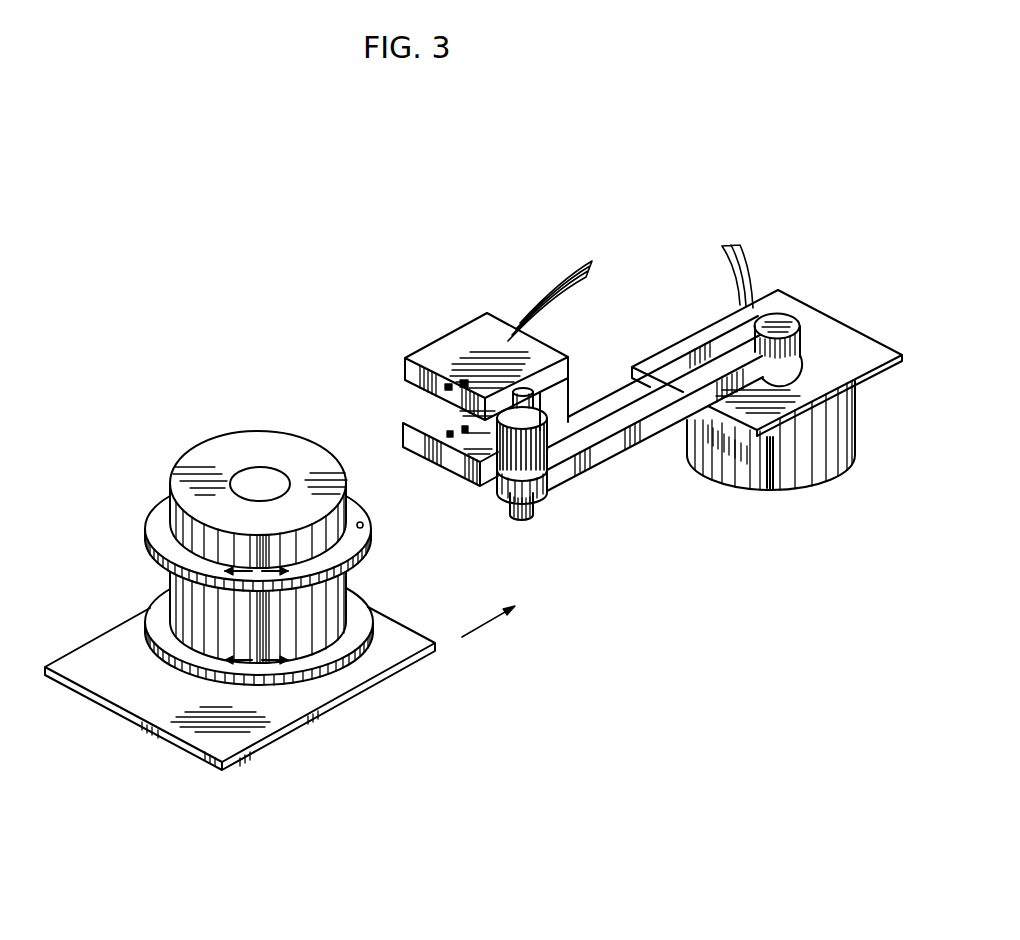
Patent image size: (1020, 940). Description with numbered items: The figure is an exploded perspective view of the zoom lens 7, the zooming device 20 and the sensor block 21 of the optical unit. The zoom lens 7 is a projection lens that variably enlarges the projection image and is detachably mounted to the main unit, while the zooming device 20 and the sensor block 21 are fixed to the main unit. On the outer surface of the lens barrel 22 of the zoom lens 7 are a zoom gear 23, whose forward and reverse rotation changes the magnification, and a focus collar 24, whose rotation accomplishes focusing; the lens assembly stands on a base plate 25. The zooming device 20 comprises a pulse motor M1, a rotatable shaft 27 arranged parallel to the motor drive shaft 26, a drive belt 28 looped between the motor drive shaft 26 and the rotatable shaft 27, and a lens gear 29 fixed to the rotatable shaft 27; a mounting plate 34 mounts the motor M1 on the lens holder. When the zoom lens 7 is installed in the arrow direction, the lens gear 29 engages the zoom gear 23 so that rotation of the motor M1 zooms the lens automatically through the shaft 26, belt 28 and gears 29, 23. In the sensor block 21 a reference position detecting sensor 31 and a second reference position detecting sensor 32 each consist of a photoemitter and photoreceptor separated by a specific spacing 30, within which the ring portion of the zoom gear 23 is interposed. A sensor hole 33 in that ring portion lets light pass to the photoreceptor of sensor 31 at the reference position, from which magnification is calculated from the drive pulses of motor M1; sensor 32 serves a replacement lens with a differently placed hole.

The zoom lens 7 is at (210, 444).
The zooming device 20 is at (716, 563).
The sensor block 21 is at (527, 236).
The lens barrel 22 is at (323, 625).
The zoom gear 23 is at (347, 550).
The focus collar 24 is at (323, 662).
The base plate 25 is at (185, 733).
The motor drive shaft 26 is at (780, 324).
The rotatable shaft 27 is at (522, 514).
The drive belt 28 is at (643, 444).
The lens gear 29 is at (563, 474).
The spacing 30 is at (410, 396).
The reference position detecting sensor 31 is at (465, 426).
The reference position detecting sensor 32 is at (450, 430).
The sensor hole 33 is at (366, 522).
The mounting plate 34 is at (850, 338).
The pulse motor M1 is at (784, 478).